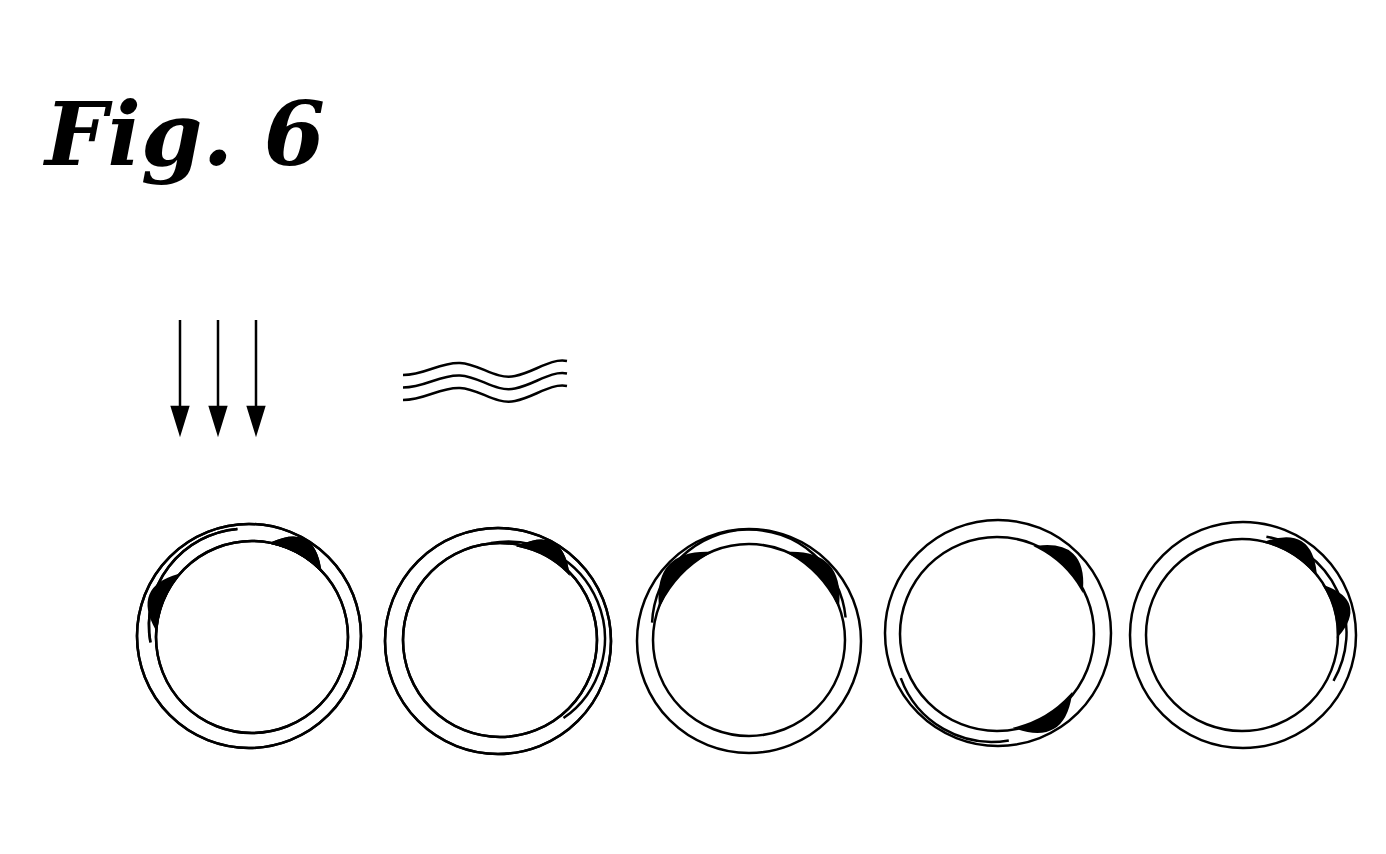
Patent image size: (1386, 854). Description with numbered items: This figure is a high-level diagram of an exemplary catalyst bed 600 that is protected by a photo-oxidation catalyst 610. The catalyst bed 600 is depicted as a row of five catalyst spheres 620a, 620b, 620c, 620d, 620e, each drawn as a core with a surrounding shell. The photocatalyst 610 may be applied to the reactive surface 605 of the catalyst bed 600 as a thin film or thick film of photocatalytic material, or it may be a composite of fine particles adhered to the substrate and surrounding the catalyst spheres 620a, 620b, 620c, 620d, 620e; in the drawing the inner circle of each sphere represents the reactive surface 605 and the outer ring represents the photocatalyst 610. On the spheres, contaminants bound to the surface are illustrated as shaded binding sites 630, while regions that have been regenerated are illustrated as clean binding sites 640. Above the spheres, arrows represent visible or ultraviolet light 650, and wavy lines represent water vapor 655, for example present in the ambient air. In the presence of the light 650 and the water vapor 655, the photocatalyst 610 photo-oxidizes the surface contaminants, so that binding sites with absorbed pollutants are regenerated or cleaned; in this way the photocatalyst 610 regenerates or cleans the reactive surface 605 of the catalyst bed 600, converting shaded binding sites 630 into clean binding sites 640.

The catalyst bed 600 is at (1001, 316).
The reactive surface 605 is at (446, 718).
The photo-oxidation catalyst 610 is at (487, 755).
The sphere 620a is at (283, 651).
The sphere 620b is at (531, 653).
The sphere 620c is at (779, 652).
The sphere 620d is at (1027, 650).
The sphere 620e is at (1273, 650).
The shaded binding sites 630 is at (553, 550).
The clean binding sites 640 is at (200, 537).
The visible or ultraviolet light 650 is at (256, 342).
The water vapor 655 is at (488, 370).